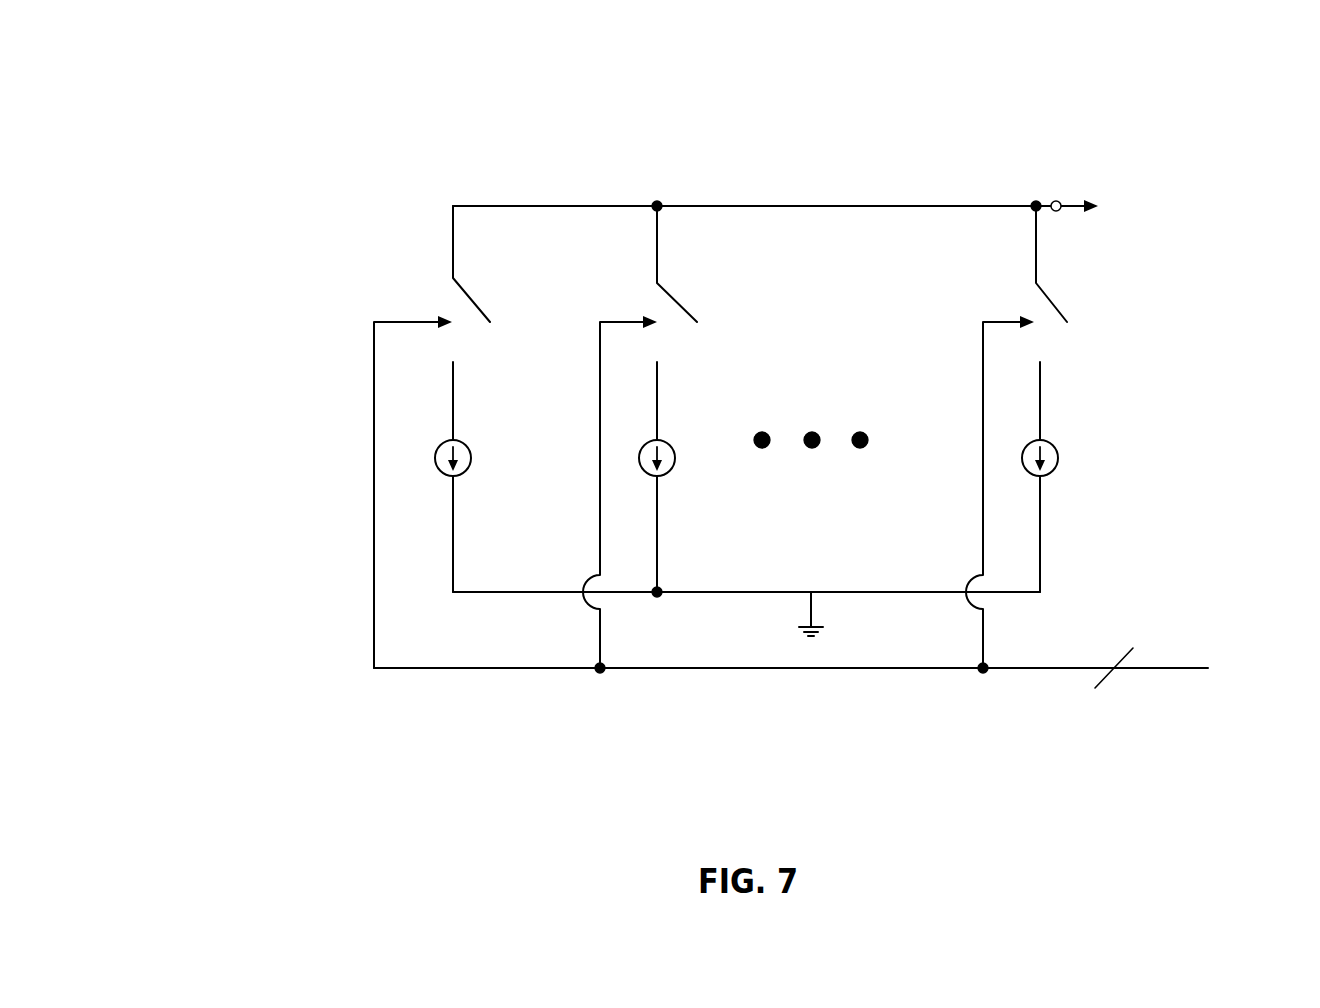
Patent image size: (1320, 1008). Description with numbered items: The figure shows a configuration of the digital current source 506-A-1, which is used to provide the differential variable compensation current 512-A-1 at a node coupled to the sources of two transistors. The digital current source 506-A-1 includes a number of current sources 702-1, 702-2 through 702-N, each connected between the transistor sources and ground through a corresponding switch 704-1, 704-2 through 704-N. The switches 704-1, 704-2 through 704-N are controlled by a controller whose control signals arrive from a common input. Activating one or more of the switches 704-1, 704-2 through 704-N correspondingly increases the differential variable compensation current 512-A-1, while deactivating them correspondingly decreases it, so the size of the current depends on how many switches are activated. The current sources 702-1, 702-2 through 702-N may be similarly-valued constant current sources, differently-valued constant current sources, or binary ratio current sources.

The digital current source 506-A-1 is at (300, 102).
The differential variable compensation current 512-A-1 is at (1052, 203).
The switch 704-1 is at (470, 296).
The switch 704-2 is at (678, 296).
The switch 704-N is at (1054, 294).
The current source 702-1 is at (468, 446).
The current source 702-2 is at (672, 446).
The current source 702-N is at (1054, 446).